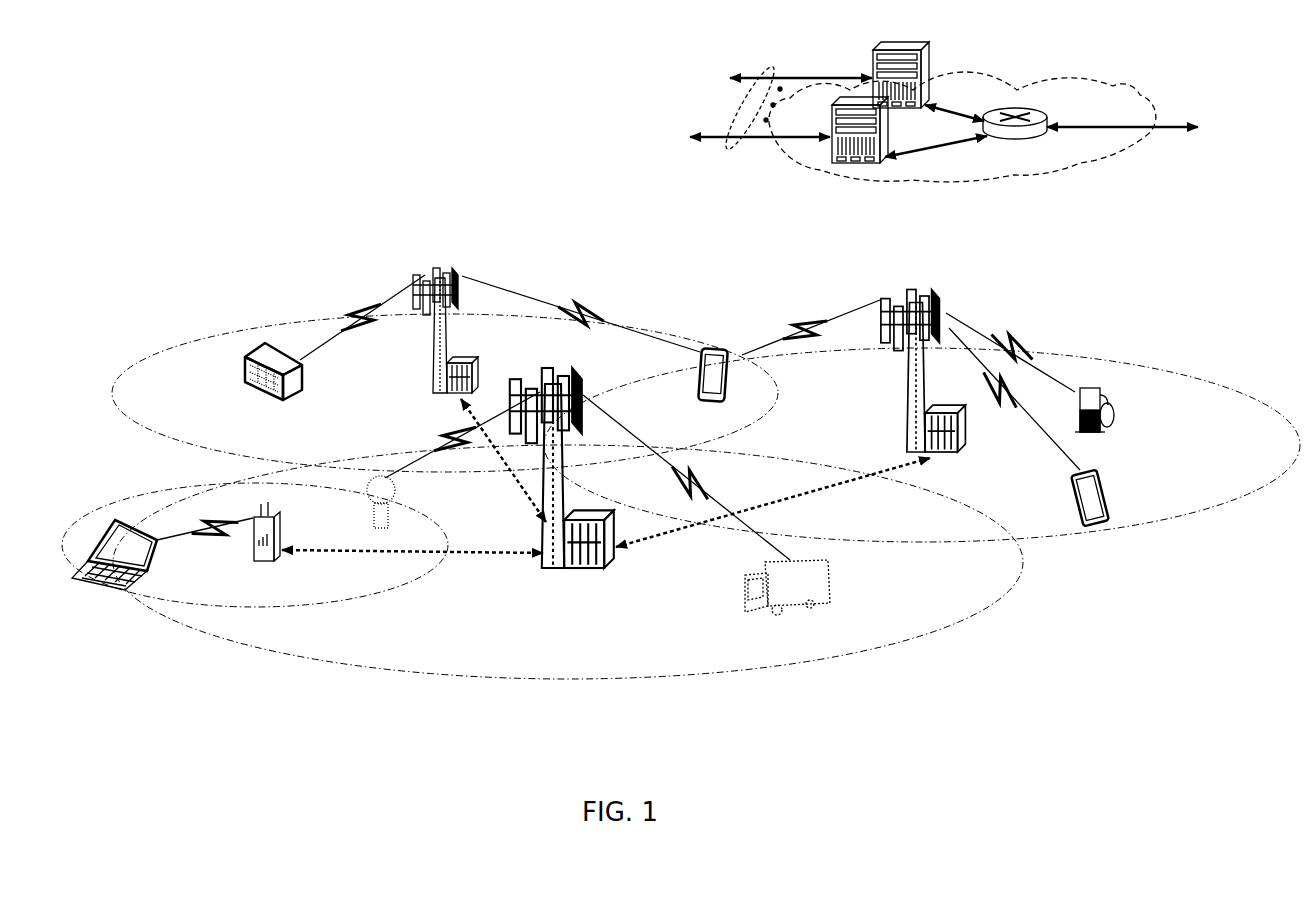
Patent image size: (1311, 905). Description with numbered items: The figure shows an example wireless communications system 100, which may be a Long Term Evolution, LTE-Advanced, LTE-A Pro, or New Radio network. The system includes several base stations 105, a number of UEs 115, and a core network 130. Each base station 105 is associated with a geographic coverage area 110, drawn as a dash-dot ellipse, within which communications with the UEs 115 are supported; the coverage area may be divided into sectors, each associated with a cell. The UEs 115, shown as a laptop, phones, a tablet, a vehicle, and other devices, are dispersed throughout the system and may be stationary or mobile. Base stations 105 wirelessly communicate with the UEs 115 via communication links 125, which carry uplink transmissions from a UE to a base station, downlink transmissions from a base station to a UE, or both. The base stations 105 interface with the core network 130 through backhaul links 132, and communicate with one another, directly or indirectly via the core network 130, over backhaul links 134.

The wireless communications system 100 is at (1117, 743).
The base station 105 is at (433, 370).
The geographic coverage area 110 is at (142, 433).
The UE 115 is at (266, 396).
The communication link 125 is at (346, 314).
The core network 130 is at (985, 186).
The backhaul link 132 is at (732, 152).
The backhaul link 134 is at (502, 456).